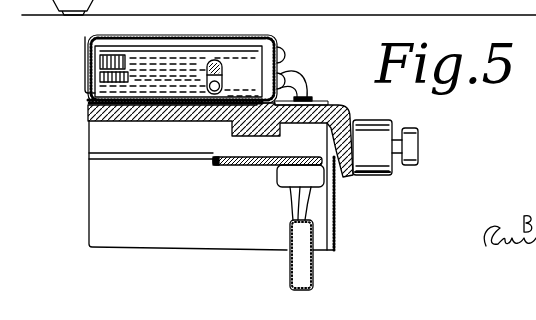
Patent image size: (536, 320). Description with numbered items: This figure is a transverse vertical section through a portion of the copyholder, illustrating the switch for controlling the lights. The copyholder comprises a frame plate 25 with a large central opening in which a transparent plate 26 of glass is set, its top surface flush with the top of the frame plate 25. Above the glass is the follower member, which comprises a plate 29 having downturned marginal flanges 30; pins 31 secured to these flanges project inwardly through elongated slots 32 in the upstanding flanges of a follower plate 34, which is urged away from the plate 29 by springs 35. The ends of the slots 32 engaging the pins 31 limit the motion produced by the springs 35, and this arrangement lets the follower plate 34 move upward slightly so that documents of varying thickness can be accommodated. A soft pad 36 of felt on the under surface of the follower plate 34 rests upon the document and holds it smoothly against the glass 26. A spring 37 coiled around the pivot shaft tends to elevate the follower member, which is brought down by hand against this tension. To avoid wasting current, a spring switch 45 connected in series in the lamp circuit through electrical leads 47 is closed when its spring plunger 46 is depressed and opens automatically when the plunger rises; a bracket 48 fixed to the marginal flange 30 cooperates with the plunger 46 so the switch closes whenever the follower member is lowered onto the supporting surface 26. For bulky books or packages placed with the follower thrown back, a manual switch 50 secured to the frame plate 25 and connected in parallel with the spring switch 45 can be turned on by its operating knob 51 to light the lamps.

The frame plate 25 is at (348, 118).
The transparent plate 26 is at (163, 113).
The plate 29 is at (240, 46).
The downturned marginal flanges 30 is at (278, 62).
The pins 31 is at (219, 68).
The elongated slots 32 is at (219, 84).
The follower plate 34 is at (90, 100).
The springs 35 is at (107, 53).
The soft pad 36 is at (116, 107).
The spring 37 is at (84, 82).
The spring switch 45 is at (288, 141).
The spring plunger 46 is at (311, 98).
The electrical leads 47 is at (298, 265).
The bracket 48 is at (293, 76).
The manual switch 50 is at (377, 173).
The operating knob 51 is at (418, 138).